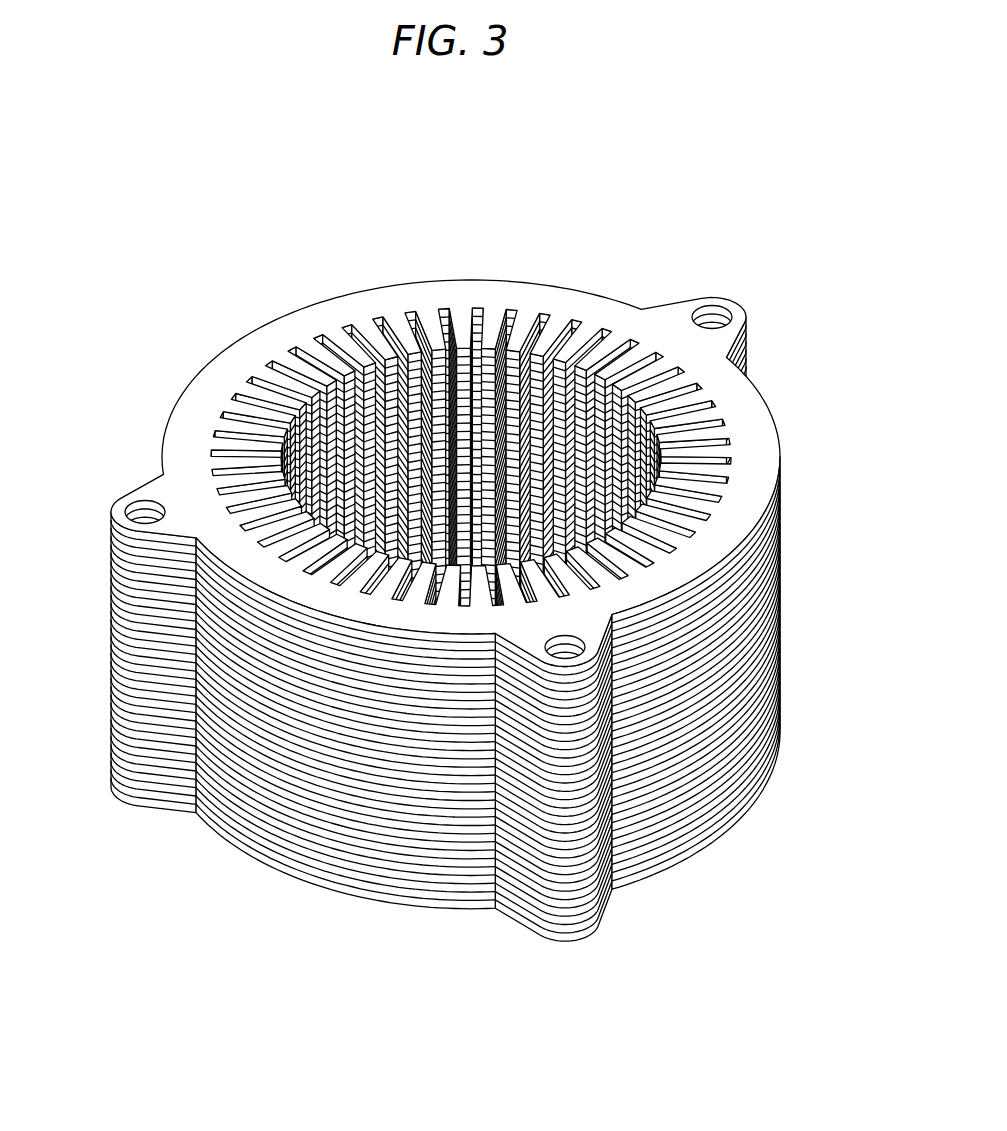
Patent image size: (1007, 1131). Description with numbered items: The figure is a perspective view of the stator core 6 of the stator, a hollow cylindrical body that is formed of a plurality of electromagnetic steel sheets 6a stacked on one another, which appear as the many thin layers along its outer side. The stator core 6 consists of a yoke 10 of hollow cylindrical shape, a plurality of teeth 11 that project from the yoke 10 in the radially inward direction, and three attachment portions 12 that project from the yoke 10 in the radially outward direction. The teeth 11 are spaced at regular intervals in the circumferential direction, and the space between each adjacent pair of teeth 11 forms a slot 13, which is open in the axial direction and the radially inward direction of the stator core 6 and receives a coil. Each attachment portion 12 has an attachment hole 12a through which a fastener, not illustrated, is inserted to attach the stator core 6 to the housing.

The stator core 6 is at (451, 509).
The electromagnetic steel sheet 6a is at (111, 633).
The yoke 10 is at (767, 425).
The tooth 11 is at (297, 408).
The attachment portion 12 is at (740, 310).
The attachment hole 12a is at (703, 307).
The slot 13 is at (380, 333).